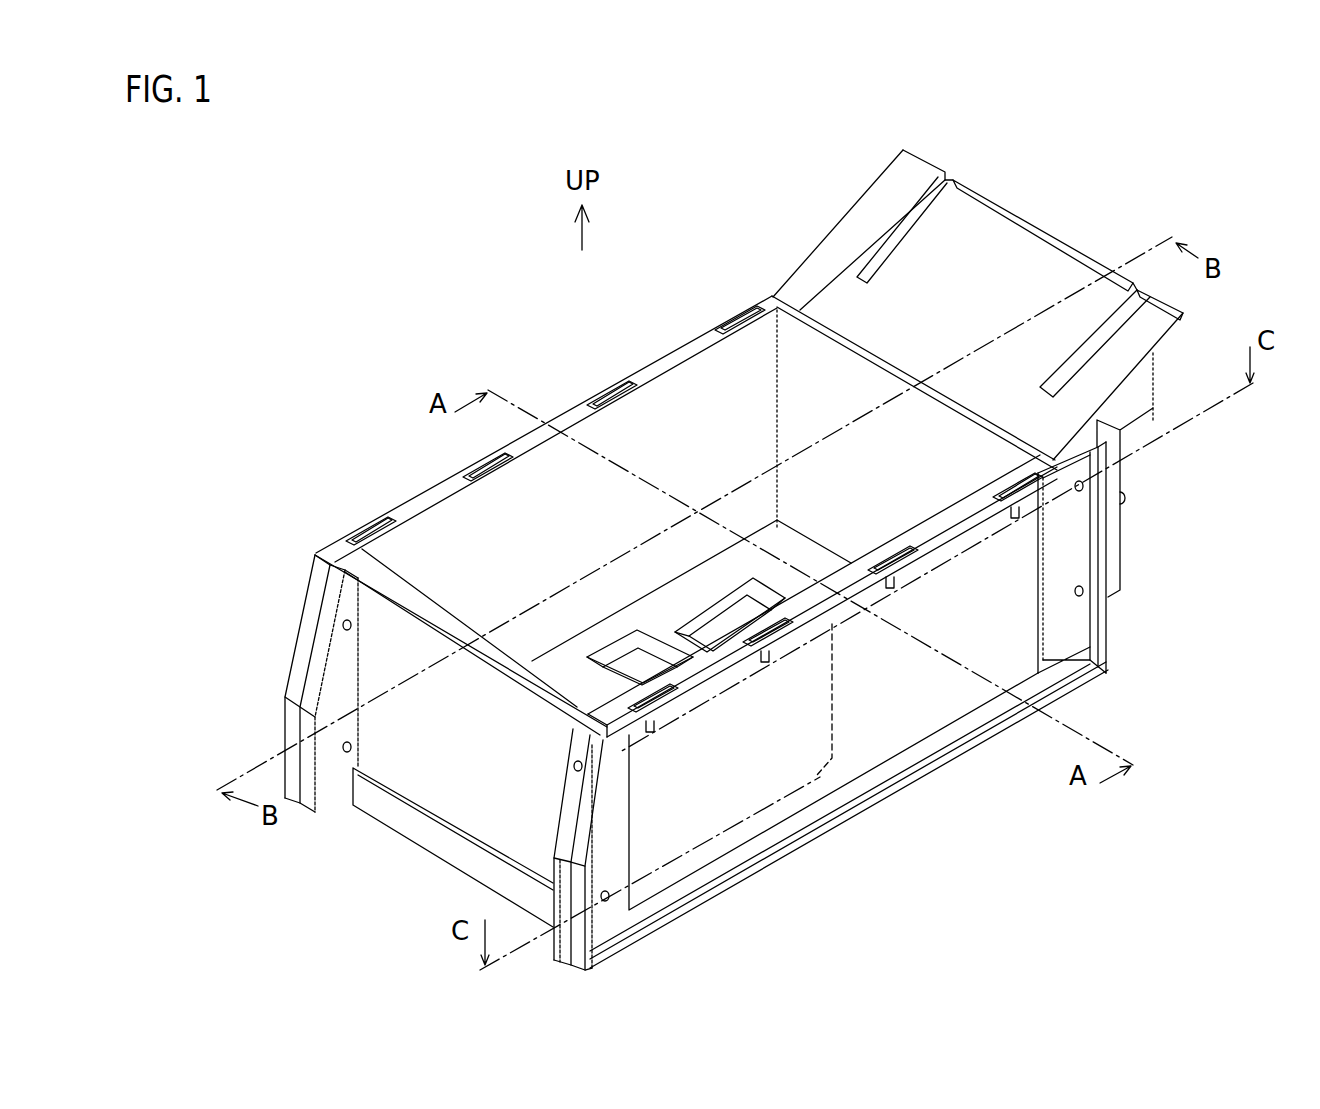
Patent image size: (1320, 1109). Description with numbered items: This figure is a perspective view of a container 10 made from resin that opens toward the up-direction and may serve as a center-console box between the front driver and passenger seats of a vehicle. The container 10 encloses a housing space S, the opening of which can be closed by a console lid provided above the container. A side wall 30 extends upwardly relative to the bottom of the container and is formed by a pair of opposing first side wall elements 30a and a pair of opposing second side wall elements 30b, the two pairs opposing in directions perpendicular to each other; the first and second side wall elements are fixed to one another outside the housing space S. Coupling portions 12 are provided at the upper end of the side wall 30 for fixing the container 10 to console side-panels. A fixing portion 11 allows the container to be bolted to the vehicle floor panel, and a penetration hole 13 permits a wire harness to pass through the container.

The container 10 is at (1120, 636).
The fixing portion 11 is at (645, 683).
The coupling portions 12 is at (620, 384).
The penetration hole 13 is at (700, 617).
The side wall 30 is at (734, 560).
The first side wall elements 30a is at (573, 428).
The second side wall elements 30b is at (803, 320).
The housing space S is at (448, 585).